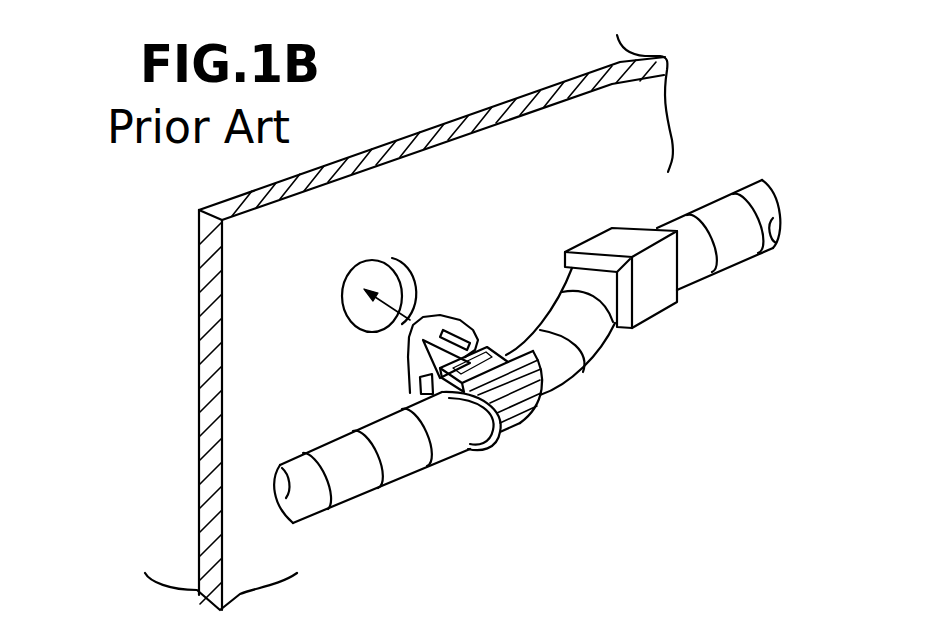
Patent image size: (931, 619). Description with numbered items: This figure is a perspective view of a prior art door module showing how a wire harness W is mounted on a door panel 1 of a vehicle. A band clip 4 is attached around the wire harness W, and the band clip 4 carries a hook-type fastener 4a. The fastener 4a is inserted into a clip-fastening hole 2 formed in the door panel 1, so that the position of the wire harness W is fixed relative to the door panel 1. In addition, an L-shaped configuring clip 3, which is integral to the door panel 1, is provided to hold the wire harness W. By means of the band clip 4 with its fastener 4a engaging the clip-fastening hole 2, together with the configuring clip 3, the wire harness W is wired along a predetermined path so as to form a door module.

The door panel 1 is at (258, 320).
The clip-fastening hole 2 is at (363, 277).
The L-shaped configuring clip 3 is at (608, 238).
The band clip 4 is at (507, 438).
The hook-type fastener 4a is at (443, 327).
The wire harness W is at (717, 202).